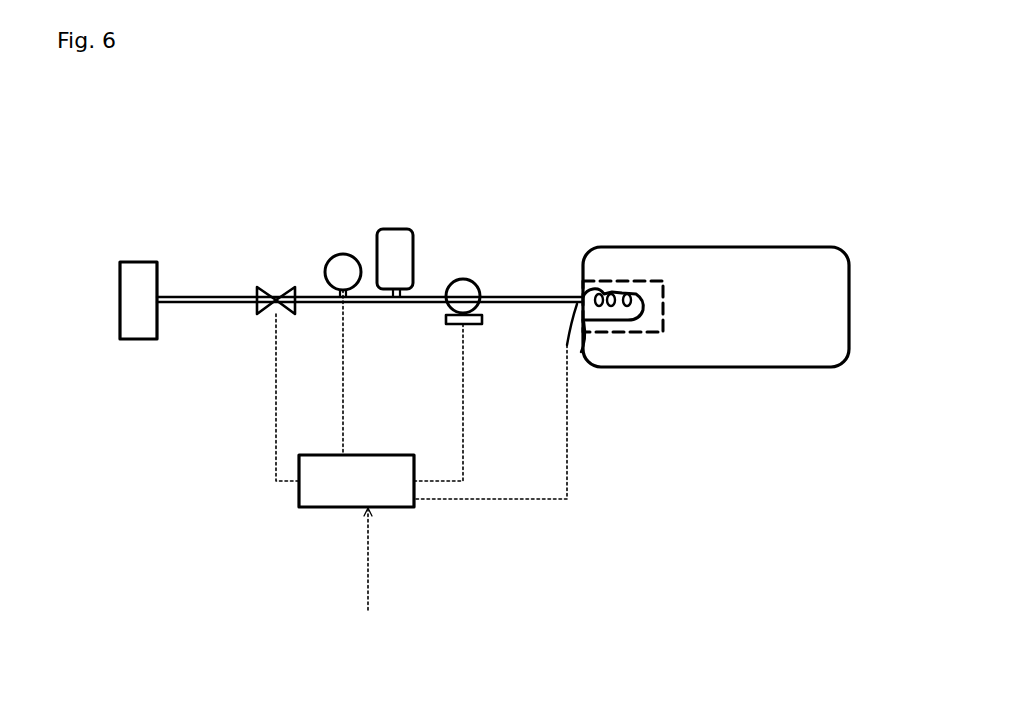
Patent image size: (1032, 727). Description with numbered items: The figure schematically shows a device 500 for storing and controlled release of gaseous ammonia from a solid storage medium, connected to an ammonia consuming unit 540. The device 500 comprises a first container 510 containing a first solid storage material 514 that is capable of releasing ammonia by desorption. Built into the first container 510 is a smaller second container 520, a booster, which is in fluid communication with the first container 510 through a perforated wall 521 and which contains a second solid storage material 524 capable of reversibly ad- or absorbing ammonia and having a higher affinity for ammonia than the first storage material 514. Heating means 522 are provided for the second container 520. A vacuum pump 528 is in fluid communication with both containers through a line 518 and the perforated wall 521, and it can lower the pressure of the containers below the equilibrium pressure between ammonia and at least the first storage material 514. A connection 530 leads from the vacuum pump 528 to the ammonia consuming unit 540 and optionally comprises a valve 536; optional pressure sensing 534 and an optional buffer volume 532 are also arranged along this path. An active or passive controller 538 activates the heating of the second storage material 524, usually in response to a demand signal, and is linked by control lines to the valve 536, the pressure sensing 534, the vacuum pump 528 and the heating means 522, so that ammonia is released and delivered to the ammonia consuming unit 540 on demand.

The device 500 is at (541, 118).
The first container 510 is at (806, 248).
The first solid storage material 514 is at (806, 300).
The line 518 is at (516, 297).
The second container 520 is at (628, 280).
The perforated wall 521 is at (660, 305).
The heating means 522 is at (628, 298).
The second solid storage material 524 is at (652, 322).
The vacuum pump 528 is at (463, 280).
The connection 530 is at (403, 305).
The buffer volume 532 is at (395, 228).
The pressure sensing 534 is at (333, 252).
The valve 536 is at (276, 297).
The controller 538 is at (330, 508).
The ammonia consuming unit 540 is at (138, 262).